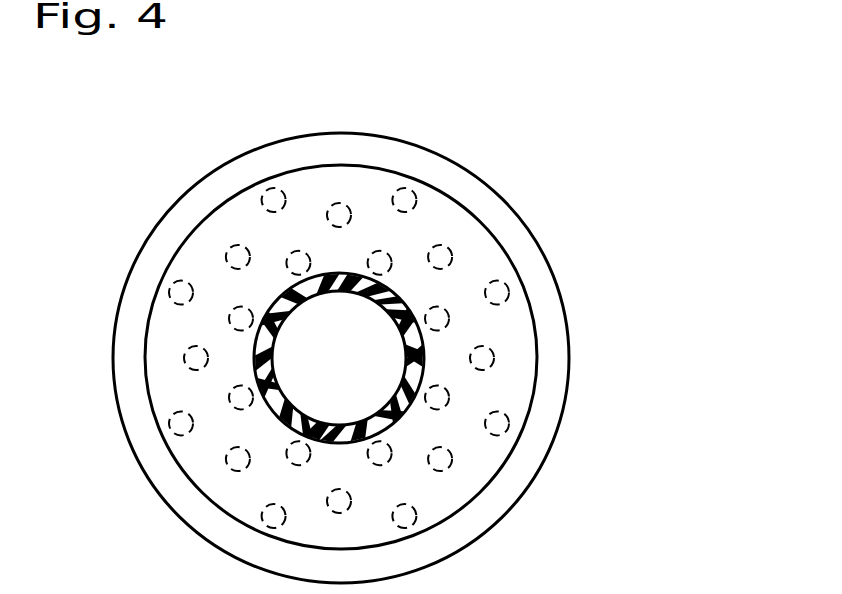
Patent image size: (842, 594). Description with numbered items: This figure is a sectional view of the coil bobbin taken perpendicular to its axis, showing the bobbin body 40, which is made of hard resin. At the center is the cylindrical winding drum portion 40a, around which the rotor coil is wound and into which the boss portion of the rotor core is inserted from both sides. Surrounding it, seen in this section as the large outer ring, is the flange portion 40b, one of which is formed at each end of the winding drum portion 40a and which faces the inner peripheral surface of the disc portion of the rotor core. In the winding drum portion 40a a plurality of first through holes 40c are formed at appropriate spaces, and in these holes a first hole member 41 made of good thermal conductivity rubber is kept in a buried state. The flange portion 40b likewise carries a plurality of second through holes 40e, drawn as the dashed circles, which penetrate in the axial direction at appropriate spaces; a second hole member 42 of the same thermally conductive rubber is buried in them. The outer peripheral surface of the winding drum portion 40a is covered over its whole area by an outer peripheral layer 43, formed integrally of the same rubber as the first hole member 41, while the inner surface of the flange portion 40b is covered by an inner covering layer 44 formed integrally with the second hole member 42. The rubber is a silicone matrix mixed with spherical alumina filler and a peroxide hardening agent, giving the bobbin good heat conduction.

The bobbin body 40 is at (480, 133).
The winding drum portion 40a is at (277, 378).
The flange portion 40b is at (168, 225).
The first through hole 40c is at (383, 307).
The second through hole 40e is at (187, 358).
The first hole member 41 is at (395, 294).
The second hole member 42 is at (168, 427).
The outer peripheral layer 43 is at (410, 320).
The inner covering layer 44 is at (175, 322).